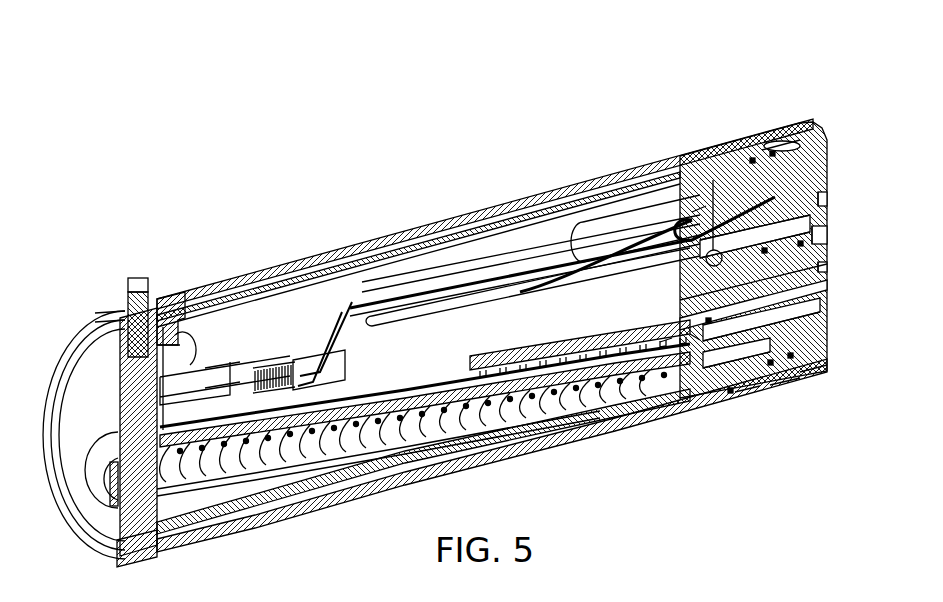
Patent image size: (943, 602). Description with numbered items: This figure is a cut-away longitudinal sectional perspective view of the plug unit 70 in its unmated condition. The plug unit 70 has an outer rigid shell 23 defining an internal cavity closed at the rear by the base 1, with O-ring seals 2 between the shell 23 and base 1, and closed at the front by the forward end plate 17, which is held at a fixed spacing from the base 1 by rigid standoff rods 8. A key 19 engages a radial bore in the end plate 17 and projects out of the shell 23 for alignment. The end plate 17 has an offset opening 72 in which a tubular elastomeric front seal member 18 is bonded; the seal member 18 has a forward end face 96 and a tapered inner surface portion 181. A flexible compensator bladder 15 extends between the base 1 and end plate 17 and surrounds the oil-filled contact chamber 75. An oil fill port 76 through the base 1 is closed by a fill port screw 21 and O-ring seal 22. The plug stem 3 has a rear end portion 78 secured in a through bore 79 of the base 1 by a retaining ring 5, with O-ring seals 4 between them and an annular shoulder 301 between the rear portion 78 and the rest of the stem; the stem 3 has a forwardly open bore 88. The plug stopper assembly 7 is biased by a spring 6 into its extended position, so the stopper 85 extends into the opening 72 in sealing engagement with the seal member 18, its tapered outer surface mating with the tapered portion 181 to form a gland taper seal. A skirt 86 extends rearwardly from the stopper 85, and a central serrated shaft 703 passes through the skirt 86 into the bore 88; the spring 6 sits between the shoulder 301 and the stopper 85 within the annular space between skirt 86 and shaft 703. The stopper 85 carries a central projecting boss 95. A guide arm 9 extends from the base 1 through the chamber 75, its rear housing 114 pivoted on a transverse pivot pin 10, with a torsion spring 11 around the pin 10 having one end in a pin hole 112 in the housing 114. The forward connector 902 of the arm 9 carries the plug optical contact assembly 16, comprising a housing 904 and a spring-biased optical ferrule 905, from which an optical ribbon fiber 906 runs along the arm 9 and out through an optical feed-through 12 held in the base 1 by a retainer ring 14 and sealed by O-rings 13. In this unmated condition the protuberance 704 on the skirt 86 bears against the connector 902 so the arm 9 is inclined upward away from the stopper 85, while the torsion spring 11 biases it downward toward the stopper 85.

The plug unit 70 is at (314, 94).
The base 1 is at (826, 362).
The O-ring seals 2 is at (745, 380).
The plug stem 3 is at (600, 370).
The O-ring seals 4 is at (826, 327).
The retaining ring 5 is at (826, 270).
The spring 6 is at (780, 375).
The plug stopper assembly 7 is at (336, 463).
The standoff rods 8 is at (557, 255).
The guide arm 9 is at (354, 303).
The pivot pin 10 is at (713, 176).
The torsion spring 11 is at (744, 262).
The optical feed-through 12 is at (706, 200).
The O-rings 13 is at (700, 215).
The retainer ring 14 is at (683, 222).
The compensator bladder 15 is at (427, 255).
The plug optical contact assembly 16 is at (177, 358).
The forward end plate 17 is at (103, 368).
The front seal member 18 is at (140, 540).
The key 19 is at (141, 278).
The fill port screw 21 is at (826, 240).
The O-ring seal 22 is at (826, 200).
The shell 23 is at (472, 225).
The offset opening 72 is at (134, 340).
The contact chamber 75 is at (488, 340).
The oil fill port 76 is at (818, 150).
The rear end portion 78 is at (826, 292).
The through bore 79 is at (806, 372).
The stopper 85 is at (125, 485).
The skirt 86 is at (252, 478).
The bore 88 is at (567, 360).
The boss 95 is at (105, 488).
The forward end face 96 is at (78, 404).
The pin hole 112 is at (698, 345).
The rear housing 114 is at (664, 345).
The tapered inner surface portion 181 is at (107, 398).
The annular shoulder 301 is at (780, 158).
The serrated shaft 703 is at (380, 428).
The guide protuberance 704 is at (272, 378).
The connector 902 is at (292, 365).
The housing 904 is at (216, 358).
The optical ferrule 905 is at (185, 372).
The optical ribbon fiber 906 is at (412, 302).